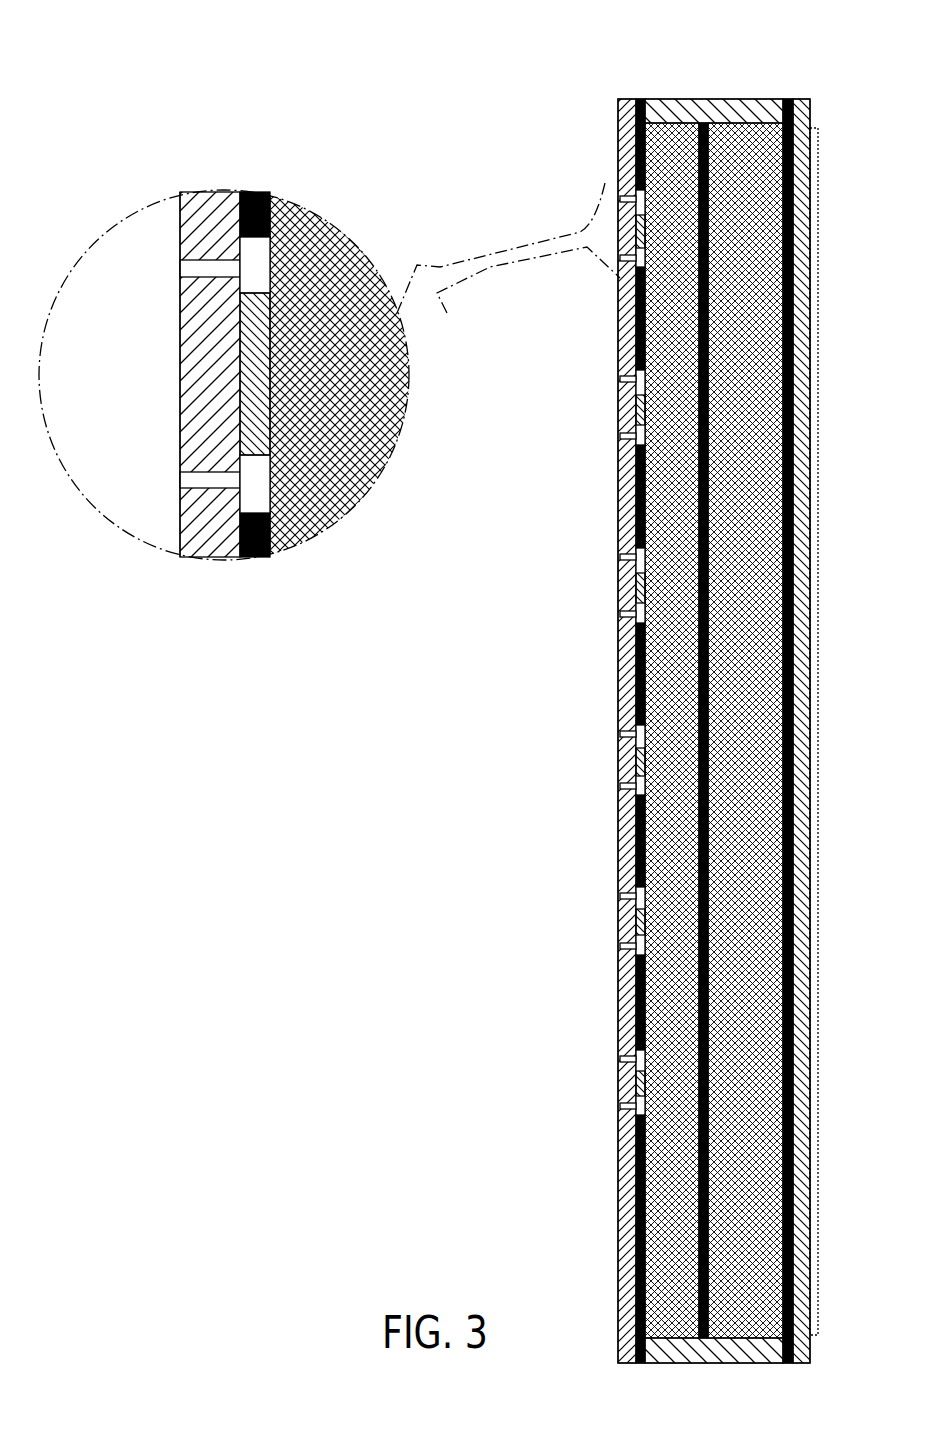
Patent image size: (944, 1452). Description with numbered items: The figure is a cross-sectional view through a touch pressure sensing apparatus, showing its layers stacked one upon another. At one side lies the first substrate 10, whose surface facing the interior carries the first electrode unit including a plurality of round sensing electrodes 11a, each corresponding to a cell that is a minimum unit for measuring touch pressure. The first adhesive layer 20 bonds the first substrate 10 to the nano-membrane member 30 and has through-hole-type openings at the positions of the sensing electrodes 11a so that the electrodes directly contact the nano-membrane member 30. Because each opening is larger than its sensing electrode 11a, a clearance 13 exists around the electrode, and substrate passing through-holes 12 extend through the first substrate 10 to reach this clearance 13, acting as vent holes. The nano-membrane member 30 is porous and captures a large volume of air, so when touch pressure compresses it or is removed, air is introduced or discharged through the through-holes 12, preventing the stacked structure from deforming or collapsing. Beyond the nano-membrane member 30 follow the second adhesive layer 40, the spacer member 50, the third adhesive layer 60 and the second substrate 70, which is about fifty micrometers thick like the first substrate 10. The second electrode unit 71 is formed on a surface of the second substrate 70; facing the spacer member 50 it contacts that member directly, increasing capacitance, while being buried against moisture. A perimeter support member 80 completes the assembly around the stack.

The first substrate 10 is at (621, 99).
The sensing electrodes 11a is at (256, 355).
The substrate passing through-holes 12 is at (180, 268).
The clearance 13 is at (256, 258).
The first adhesive layer 20 is at (640, 99).
The nano-membrane member 30 is at (657, 118).
The second adhesive layer 40 is at (703, 125).
The spacer member 50 is at (738, 130).
The third adhesive layer 60 is at (788, 99).
The second substrate 70 is at (805, 99).
The second electrode unit 71 is at (815, 128).
The perimeter support member 80 is at (763, 100).